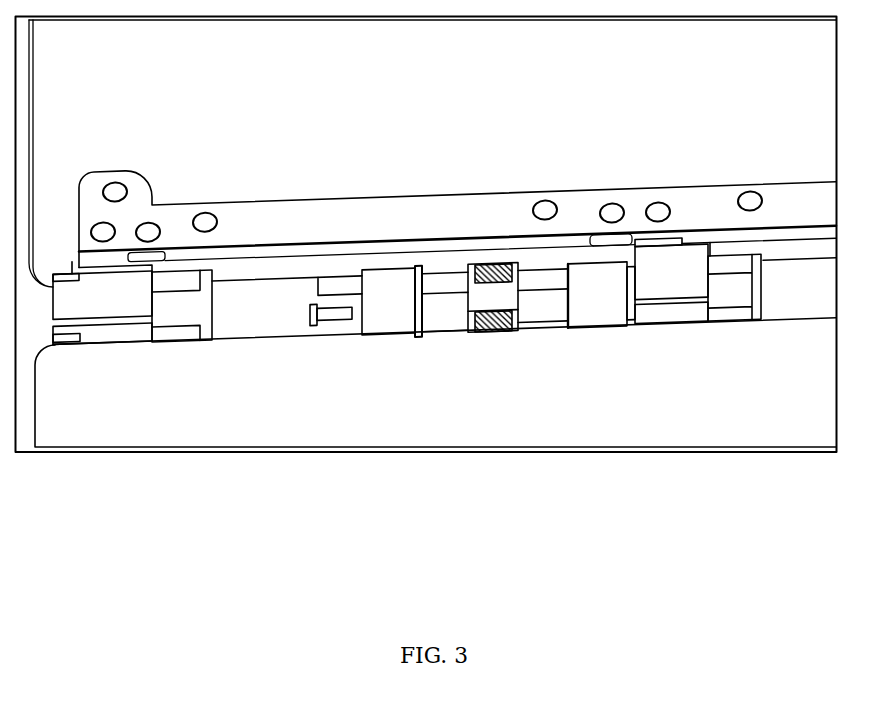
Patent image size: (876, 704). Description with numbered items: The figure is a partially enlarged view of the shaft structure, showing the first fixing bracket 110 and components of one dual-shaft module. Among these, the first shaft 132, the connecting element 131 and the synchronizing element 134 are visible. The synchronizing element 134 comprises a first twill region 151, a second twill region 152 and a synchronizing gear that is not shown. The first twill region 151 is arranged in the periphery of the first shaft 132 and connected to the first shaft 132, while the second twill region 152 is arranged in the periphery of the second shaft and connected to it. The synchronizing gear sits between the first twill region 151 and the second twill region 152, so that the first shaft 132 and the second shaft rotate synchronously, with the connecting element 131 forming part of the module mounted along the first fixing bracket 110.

The first fixing bracket 110 is at (425, 220).
The connecting element 131 is at (667, 292).
The first shaft 132 is at (343, 277).
The synchronizing element 134 is at (482, 306).
The first twill region 151 is at (482, 306).
The second twill region 152 is at (500, 333).